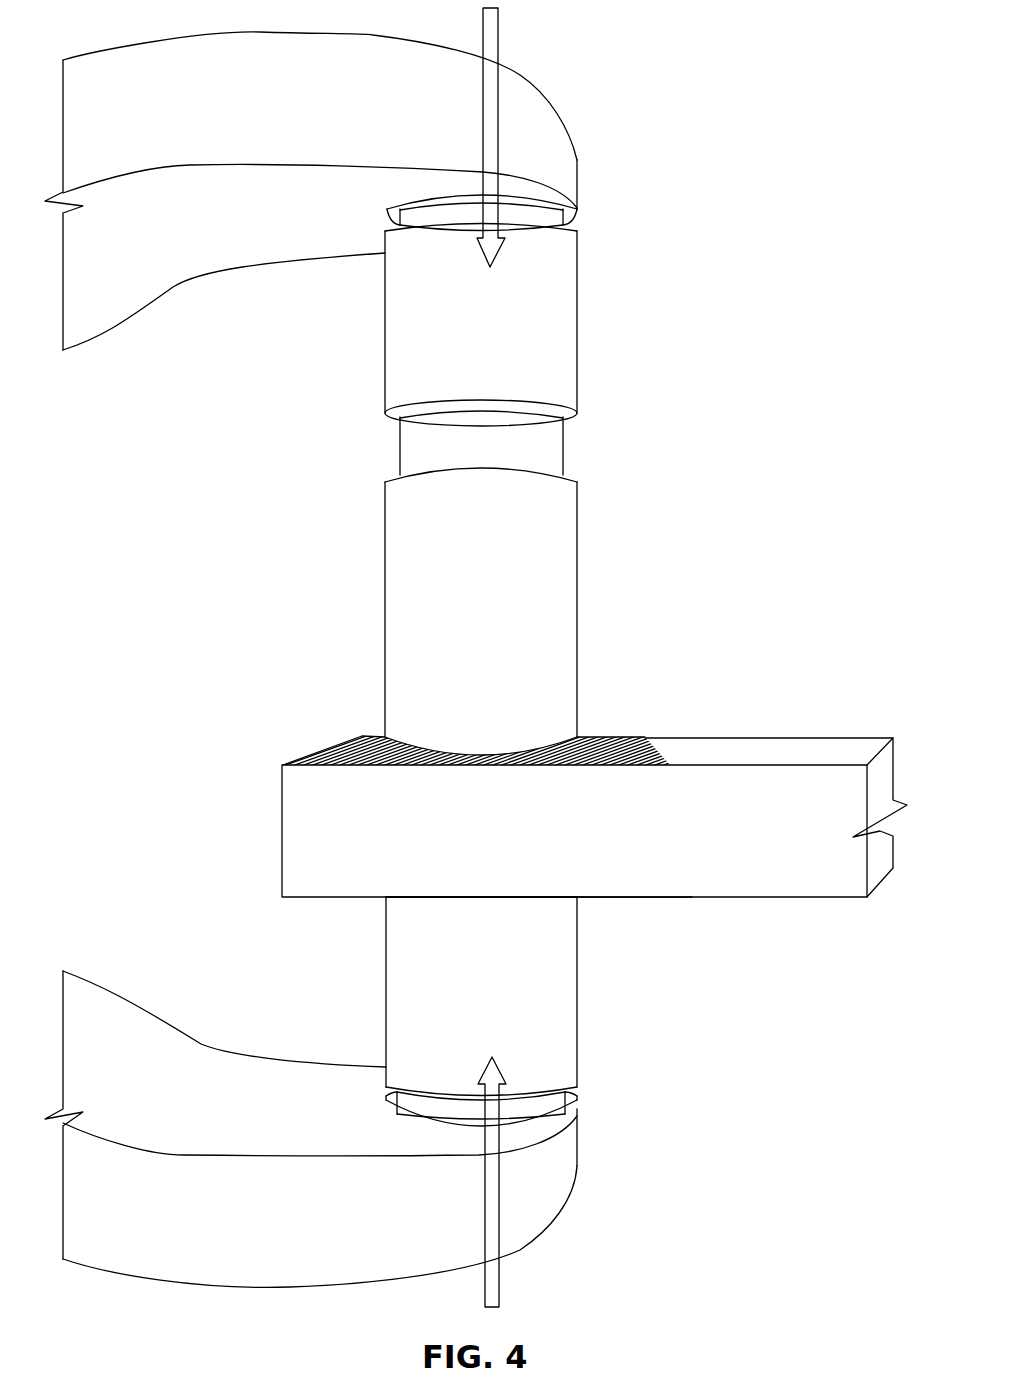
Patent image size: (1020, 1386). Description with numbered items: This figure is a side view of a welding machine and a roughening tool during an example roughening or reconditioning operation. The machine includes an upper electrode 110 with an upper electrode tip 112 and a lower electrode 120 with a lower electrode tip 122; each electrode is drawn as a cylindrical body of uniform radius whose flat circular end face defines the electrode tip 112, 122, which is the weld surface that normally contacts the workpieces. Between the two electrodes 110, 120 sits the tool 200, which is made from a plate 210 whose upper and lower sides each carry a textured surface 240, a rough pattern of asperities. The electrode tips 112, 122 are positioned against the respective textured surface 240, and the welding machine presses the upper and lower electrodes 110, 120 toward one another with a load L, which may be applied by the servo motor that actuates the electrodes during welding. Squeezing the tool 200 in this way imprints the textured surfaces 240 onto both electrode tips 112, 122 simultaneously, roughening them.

The upper electrode 110 is at (471, 475).
The upper electrode tip 112 is at (428, 746).
The lower electrode 120 is at (471, 1011).
The lower electrode tip 122 is at (427, 901).
The tool 200 is at (544, 820).
The plate 210 is at (798, 883).
The textured surface 240 is at (612, 739).
The load L is at (500, 38).